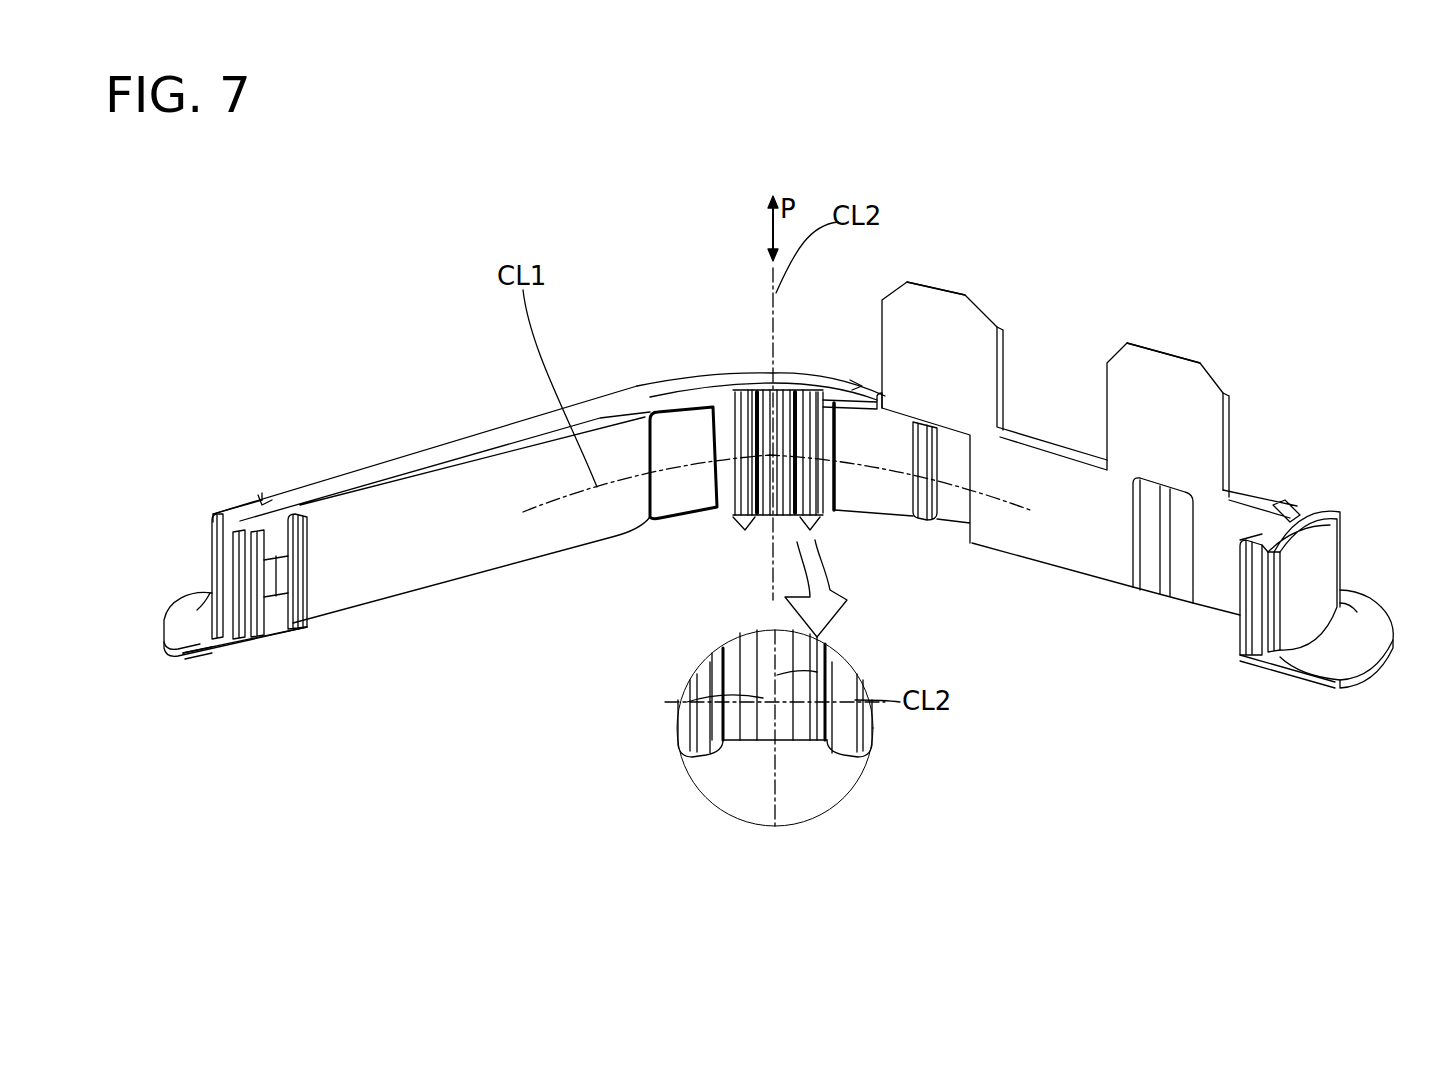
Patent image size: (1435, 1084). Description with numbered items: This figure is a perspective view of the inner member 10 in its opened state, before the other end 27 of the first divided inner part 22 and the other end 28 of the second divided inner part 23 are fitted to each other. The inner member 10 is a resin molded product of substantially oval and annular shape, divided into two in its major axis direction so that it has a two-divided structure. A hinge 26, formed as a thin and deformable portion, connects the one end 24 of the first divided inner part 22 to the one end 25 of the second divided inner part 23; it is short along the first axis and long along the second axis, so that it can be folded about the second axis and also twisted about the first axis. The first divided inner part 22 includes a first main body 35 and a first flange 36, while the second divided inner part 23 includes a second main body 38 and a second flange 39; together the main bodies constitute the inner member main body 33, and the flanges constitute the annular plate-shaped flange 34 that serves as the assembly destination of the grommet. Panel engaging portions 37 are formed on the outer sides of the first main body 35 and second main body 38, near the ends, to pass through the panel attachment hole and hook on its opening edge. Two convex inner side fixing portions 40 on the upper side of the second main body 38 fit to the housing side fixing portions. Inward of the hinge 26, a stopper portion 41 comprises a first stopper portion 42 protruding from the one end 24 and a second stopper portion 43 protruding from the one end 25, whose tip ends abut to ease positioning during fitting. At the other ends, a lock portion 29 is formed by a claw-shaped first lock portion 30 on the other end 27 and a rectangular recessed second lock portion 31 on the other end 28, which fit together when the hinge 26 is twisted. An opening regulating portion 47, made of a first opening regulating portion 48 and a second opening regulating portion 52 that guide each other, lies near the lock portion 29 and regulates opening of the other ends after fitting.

The inner member 10 is at (310, 265).
The first divided inner part 22 is at (370, 455).
The second divided inner part 23 is at (1065, 400).
The one end of the first divided inner part 24 is at (715, 378).
The one end of the second divided inner part 25 is at (857, 383).
The hinge 26 is at (775, 385).
The other end of the first divided inner part 27 is at (230, 650).
The other end of the second divided inner part 28 is at (1250, 662).
The lock portion 29 is at (160, 194).
The first lock portion 30 is at (428, 628).
The second lock portion 31 is at (1255, 633).
The inner member main body 33 is at (160, 290).
The flange 34 is at (160, 390).
The first main body 35 is at (540, 610).
The first flange 36 is at (150, 698).
The panel engaging portion 37 is at (1345, 530).
The second main body 38 is at (1025, 608).
The second flange 39 is at (1400, 568).
The inner side fixing portion 40 is at (955, 288).
The stopper portion 41 is at (160, 750).
The first stopper portion 42 is at (748, 522).
The second stopper portion 43 is at (850, 570).
The opening regulating portion 47 is at (160, 845).
The first opening regulating portion 48 is at (255, 633).
The second opening regulating portion 52 is at (1312, 392).